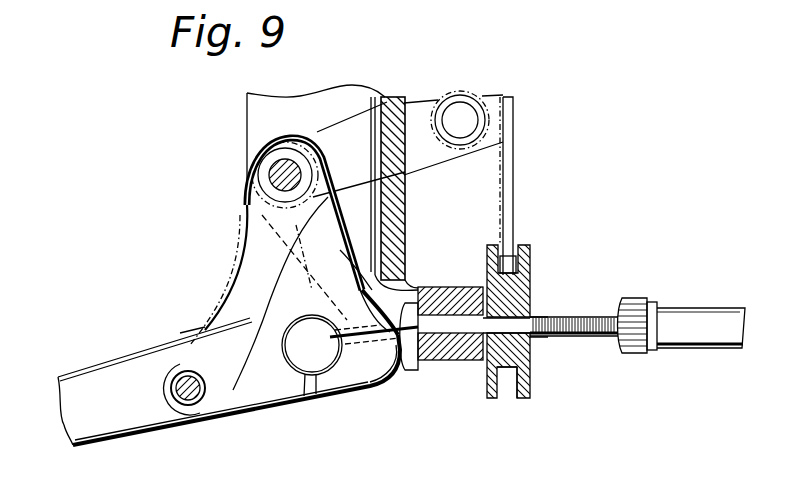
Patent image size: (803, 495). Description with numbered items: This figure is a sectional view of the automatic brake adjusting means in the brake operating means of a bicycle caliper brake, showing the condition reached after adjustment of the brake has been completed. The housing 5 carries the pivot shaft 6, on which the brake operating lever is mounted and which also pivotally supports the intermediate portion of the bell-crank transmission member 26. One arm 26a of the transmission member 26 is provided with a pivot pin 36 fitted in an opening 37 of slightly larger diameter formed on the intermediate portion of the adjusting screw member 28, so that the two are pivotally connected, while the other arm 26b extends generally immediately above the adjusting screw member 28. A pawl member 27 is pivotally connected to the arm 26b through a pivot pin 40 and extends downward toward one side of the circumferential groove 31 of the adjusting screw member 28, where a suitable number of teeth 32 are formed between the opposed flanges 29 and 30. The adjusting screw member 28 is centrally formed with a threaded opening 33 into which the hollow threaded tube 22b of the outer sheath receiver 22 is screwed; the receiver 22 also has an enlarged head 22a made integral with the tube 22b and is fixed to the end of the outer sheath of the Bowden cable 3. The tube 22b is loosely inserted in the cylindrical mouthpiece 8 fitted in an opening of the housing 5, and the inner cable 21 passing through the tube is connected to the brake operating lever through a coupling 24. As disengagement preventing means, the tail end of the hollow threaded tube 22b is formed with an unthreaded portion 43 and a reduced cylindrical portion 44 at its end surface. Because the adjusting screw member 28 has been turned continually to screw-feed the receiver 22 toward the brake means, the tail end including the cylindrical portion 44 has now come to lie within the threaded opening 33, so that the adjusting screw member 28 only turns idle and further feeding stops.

The Bowden cable 3 is at (734, 356).
The housing 5 is at (247, 112).
The pivot shaft 6 is at (290, 178).
The cylindrical mouthpiece 8 is at (452, 288).
The inner cable 21 is at (412, 372).
The outer sheath receiver 22 is at (647, 295).
The enlarged head 22a is at (638, 352).
The hollow threaded tube 22b is at (596, 340).
The coupling 24 is at (312, 376).
The transmission member 26 is at (238, 268).
The arm of transmission member 26a is at (185, 350).
The other arm of transmission member 26b is at (410, 102).
The pawl member 27 is at (520, 171).
The adjusting screw member 28 is at (539, 363).
The flange 29 is at (528, 398).
The flange 30 is at (495, 398).
The circumferential groove 31 is at (507, 392).
The teeth 32 is at (526, 245).
The threaded opening 33 is at (528, 300).
The pivot pin 36 is at (185, 408).
The opening 37 is at (200, 406).
The pivot pin 40 is at (462, 118).
The unthreaded portion 43 is at (533, 322).
The reduced cylindrical portion 44 is at (468, 362).